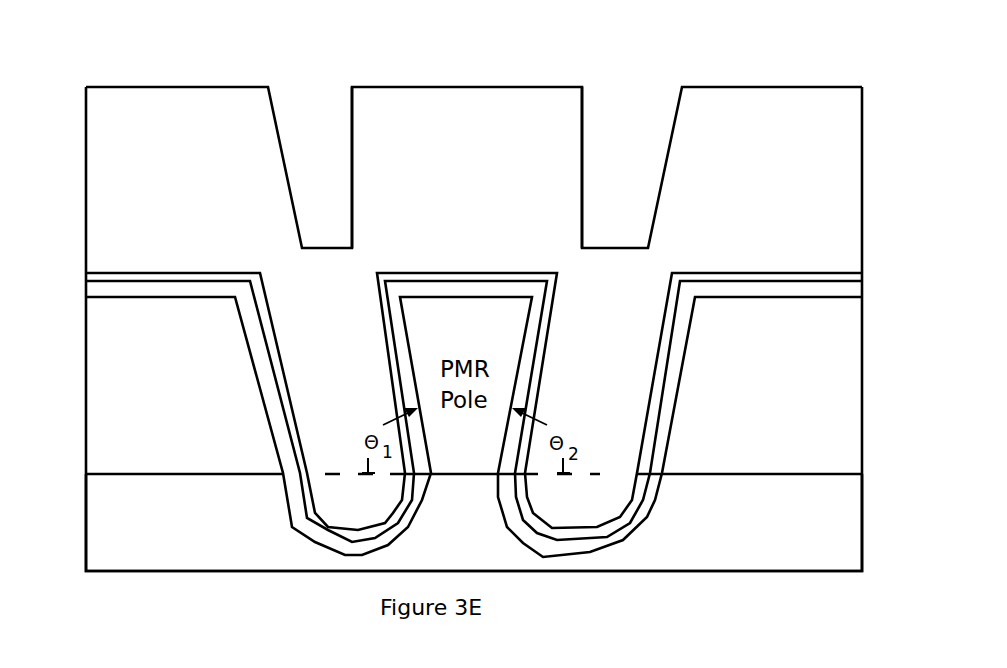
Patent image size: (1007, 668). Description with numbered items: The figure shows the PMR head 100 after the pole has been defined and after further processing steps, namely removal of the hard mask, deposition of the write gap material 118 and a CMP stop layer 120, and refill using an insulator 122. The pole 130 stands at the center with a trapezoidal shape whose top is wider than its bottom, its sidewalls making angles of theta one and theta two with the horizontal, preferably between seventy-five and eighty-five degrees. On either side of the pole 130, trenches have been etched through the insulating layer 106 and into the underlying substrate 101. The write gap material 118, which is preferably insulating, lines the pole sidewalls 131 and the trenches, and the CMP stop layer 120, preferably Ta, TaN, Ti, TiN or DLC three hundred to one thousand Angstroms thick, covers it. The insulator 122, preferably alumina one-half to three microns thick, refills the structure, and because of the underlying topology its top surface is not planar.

The PMR head 100 is at (458, 23).
The pole 130 is at (400, 80).
The insulator 122 is at (85, 135).
The CMP stop layer 120 is at (120, 272).
The write gap material 118 is at (87, 288).
The insulating layer 106 is at (83, 457).
The substrate 101 is at (83, 553).
The pole sidewall 131 is at (415, 384).